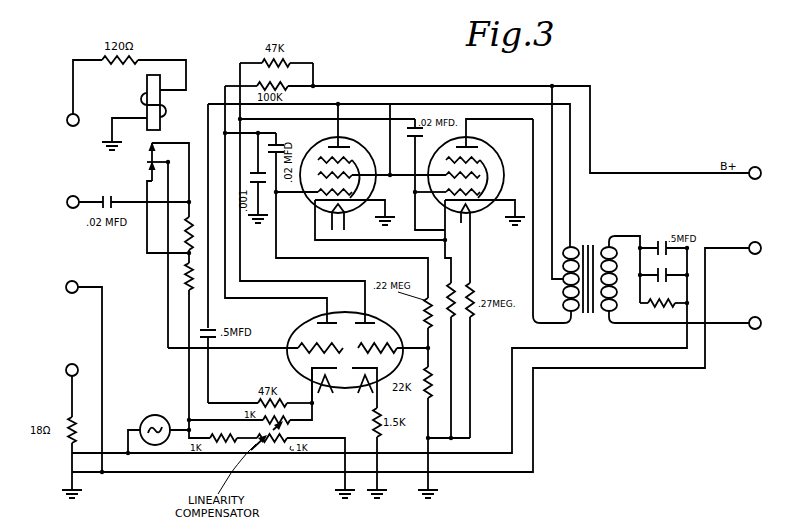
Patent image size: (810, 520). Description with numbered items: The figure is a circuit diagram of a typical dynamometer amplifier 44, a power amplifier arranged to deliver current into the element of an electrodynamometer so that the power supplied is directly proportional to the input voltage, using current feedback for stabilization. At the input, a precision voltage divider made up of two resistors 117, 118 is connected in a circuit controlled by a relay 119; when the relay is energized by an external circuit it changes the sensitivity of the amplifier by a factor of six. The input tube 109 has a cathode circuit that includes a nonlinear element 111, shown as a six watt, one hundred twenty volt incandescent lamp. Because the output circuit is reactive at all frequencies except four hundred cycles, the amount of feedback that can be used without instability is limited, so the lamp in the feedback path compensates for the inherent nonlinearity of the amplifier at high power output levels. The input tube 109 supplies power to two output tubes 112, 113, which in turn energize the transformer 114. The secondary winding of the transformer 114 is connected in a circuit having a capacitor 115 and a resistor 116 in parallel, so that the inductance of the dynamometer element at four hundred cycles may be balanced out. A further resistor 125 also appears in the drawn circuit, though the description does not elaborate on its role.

The dynamometer amplifier 44 is at (508, 259).
The input tube 109 is at (310, 323).
The nonlinear element 111 is at (157, 441).
The output tube 112 is at (318, 196).
The output tube 113 is at (497, 166).
The transformer 114 is at (600, 236).
The capacitor 115 is at (672, 273).
The resistor 116 is at (677, 304).
The resistor 117 is at (181, 243).
The resistor 118 is at (179, 287).
The relay 119 is at (147, 90).
The resistor 125 is at (454, 294).